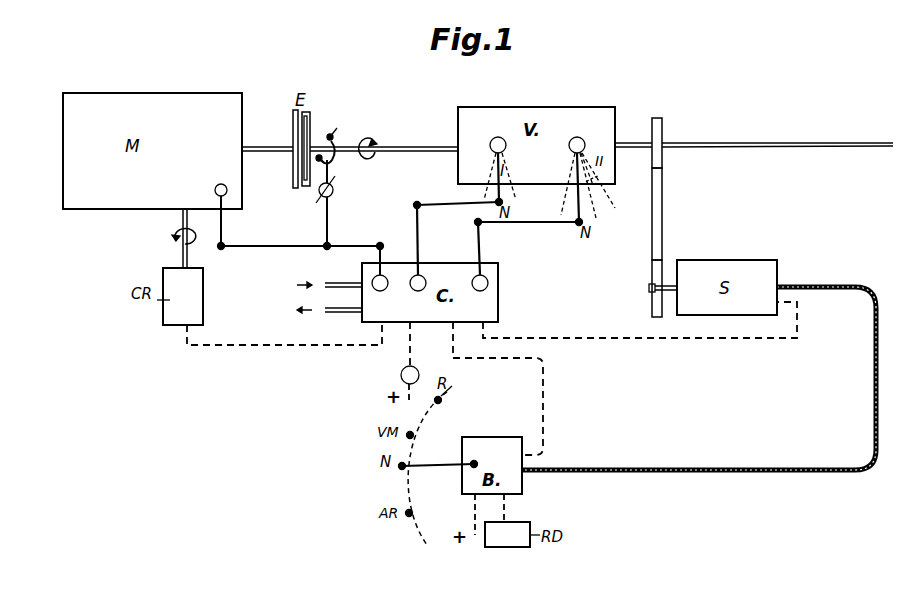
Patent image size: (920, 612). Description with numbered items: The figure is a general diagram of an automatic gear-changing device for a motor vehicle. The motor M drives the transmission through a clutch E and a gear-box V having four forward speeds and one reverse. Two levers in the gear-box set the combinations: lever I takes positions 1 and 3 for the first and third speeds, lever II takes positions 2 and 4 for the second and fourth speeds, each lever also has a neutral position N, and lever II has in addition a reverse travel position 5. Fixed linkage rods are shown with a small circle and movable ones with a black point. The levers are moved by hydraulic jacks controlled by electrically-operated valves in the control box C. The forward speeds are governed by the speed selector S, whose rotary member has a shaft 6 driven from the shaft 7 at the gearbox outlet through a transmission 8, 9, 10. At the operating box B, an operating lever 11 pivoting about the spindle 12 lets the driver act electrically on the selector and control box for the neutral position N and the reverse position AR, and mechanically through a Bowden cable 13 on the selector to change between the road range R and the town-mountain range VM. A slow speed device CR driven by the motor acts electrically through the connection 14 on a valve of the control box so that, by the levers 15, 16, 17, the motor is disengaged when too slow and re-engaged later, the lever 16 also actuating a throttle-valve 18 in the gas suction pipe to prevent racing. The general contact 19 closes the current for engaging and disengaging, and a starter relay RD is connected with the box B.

The first speed position 1 is at (486, 173).
The second speed position 2 is at (572, 172).
The third speed position 3 is at (514, 195).
The fourth speed position 4 is at (592, 214).
The reverse travel position 5 is at (612, 198).
The shaft 6 is at (672, 286).
The shaft 7 is at (728, 143).
The transmission element 8 is at (662, 126).
The transmission element 9 is at (659, 218).
The transmission element 10 is at (652, 276).
The operating lever 11 is at (446, 458).
The spindle 12 is at (473, 453).
The Bowden cable 13 is at (730, 468).
The connection 14 is at (258, 345).
The lever 15 is at (391, 255).
The lever 16 is at (347, 250).
The lever 17 is at (335, 206).
The throttle-valve 18 is at (216, 191).
The general contact 19 is at (395, 362).